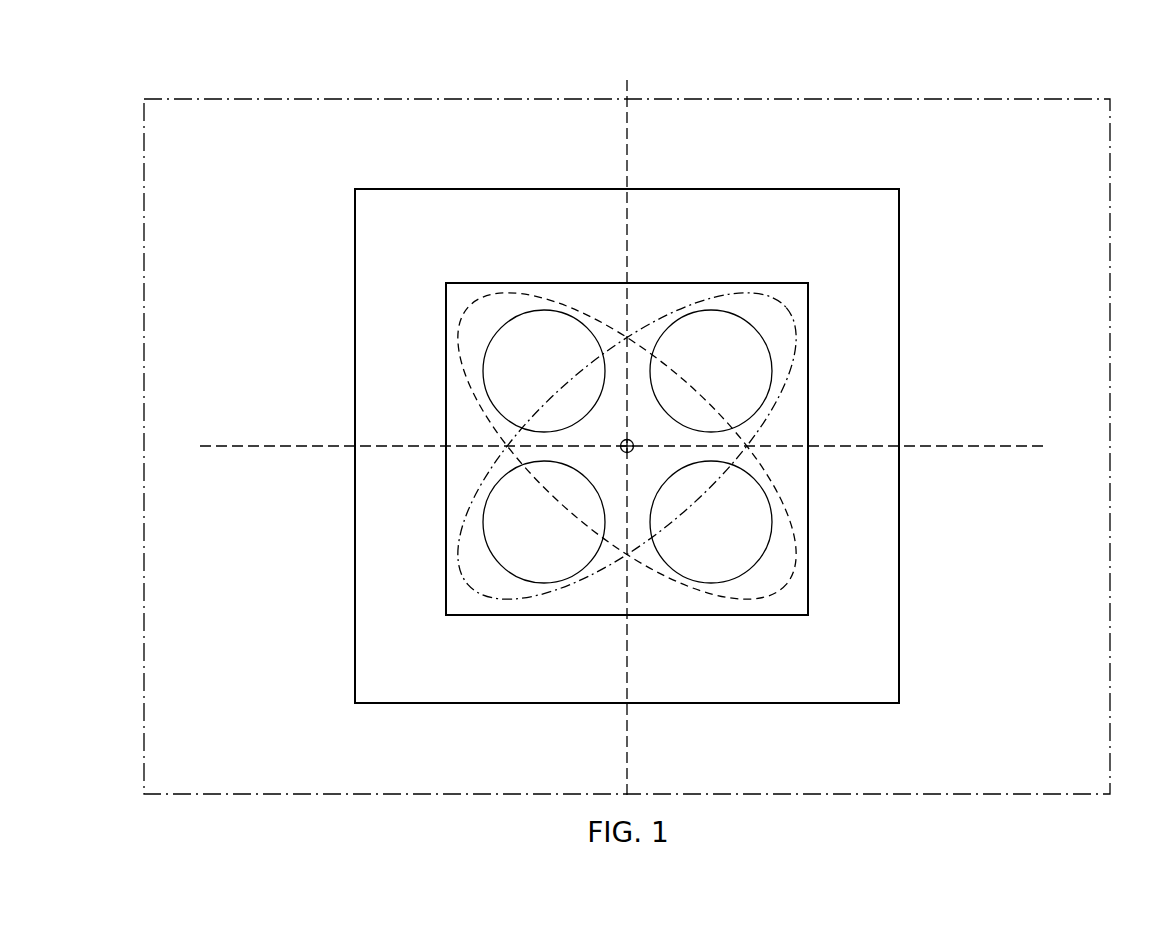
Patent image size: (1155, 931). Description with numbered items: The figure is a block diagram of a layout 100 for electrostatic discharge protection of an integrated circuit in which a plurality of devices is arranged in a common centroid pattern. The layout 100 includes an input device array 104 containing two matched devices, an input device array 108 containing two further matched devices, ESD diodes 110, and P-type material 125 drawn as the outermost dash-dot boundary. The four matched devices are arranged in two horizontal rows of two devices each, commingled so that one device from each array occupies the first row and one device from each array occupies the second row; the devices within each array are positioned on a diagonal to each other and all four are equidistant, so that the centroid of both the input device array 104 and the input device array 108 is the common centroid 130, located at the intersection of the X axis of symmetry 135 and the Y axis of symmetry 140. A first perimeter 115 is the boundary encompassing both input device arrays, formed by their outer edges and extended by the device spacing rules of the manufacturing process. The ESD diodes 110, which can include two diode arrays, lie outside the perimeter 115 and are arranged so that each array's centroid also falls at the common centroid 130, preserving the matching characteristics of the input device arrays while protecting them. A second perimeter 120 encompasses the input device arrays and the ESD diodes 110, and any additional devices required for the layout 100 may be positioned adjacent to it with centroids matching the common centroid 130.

The layout 100 is at (372, 46).
The input device array 104 is at (502, 292).
The input device array 108 is at (732, 292).
The ESD diodes 110 is at (377, 296).
The first perimeter 115 is at (808, 284).
The second perimeter 120 is at (355, 210).
The P-type material 125 is at (875, 99).
The common centroid 130 is at (634, 448).
The X axis of symmetry 135 is at (1018, 446).
The Y axis of symmetry 140 is at (627, 84).